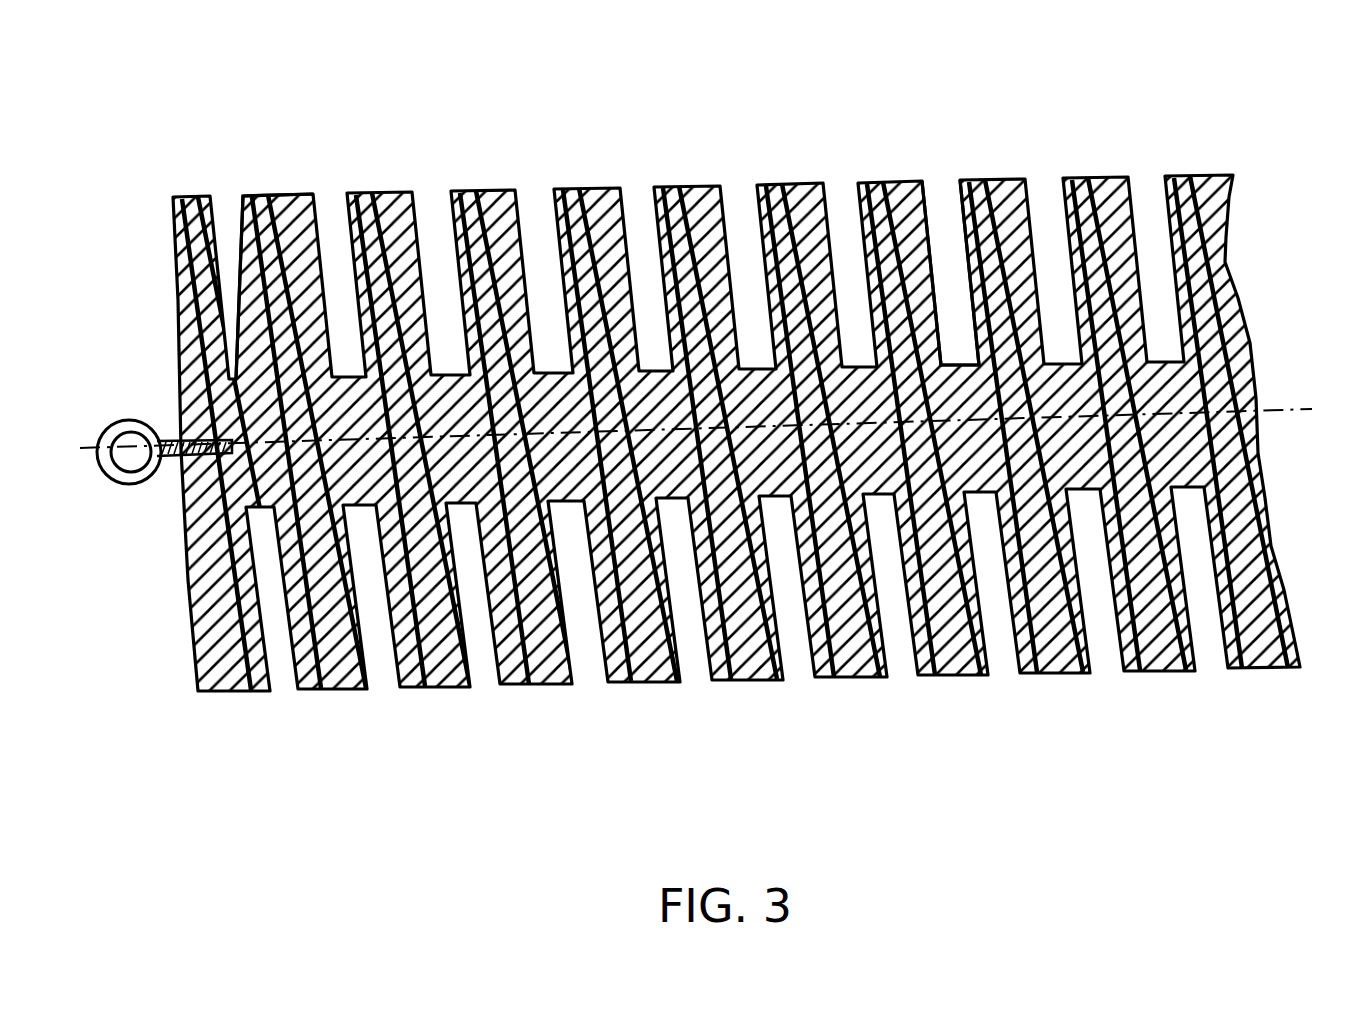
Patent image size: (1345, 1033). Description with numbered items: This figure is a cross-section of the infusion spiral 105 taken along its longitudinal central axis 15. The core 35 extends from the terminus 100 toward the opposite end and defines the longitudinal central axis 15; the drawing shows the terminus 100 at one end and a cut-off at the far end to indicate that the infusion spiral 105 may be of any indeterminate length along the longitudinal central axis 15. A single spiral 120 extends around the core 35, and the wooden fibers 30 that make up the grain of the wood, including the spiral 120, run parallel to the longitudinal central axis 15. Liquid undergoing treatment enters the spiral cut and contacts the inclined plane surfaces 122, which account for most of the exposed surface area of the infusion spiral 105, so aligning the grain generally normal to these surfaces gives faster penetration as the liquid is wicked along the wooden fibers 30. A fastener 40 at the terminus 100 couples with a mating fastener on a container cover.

The infusion spiral 105 is at (705, 415).
The terminus 100 is at (176, 313).
The wooden fibers 30 is at (287, 196).
The core 35 is at (951, 366).
The spiral 120 is at (743, 433).
The inclined plane surface 122 is at (703, 190).
The longitudinal central axis 15 is at (1316, 408).
The fastener 40 is at (129, 486).